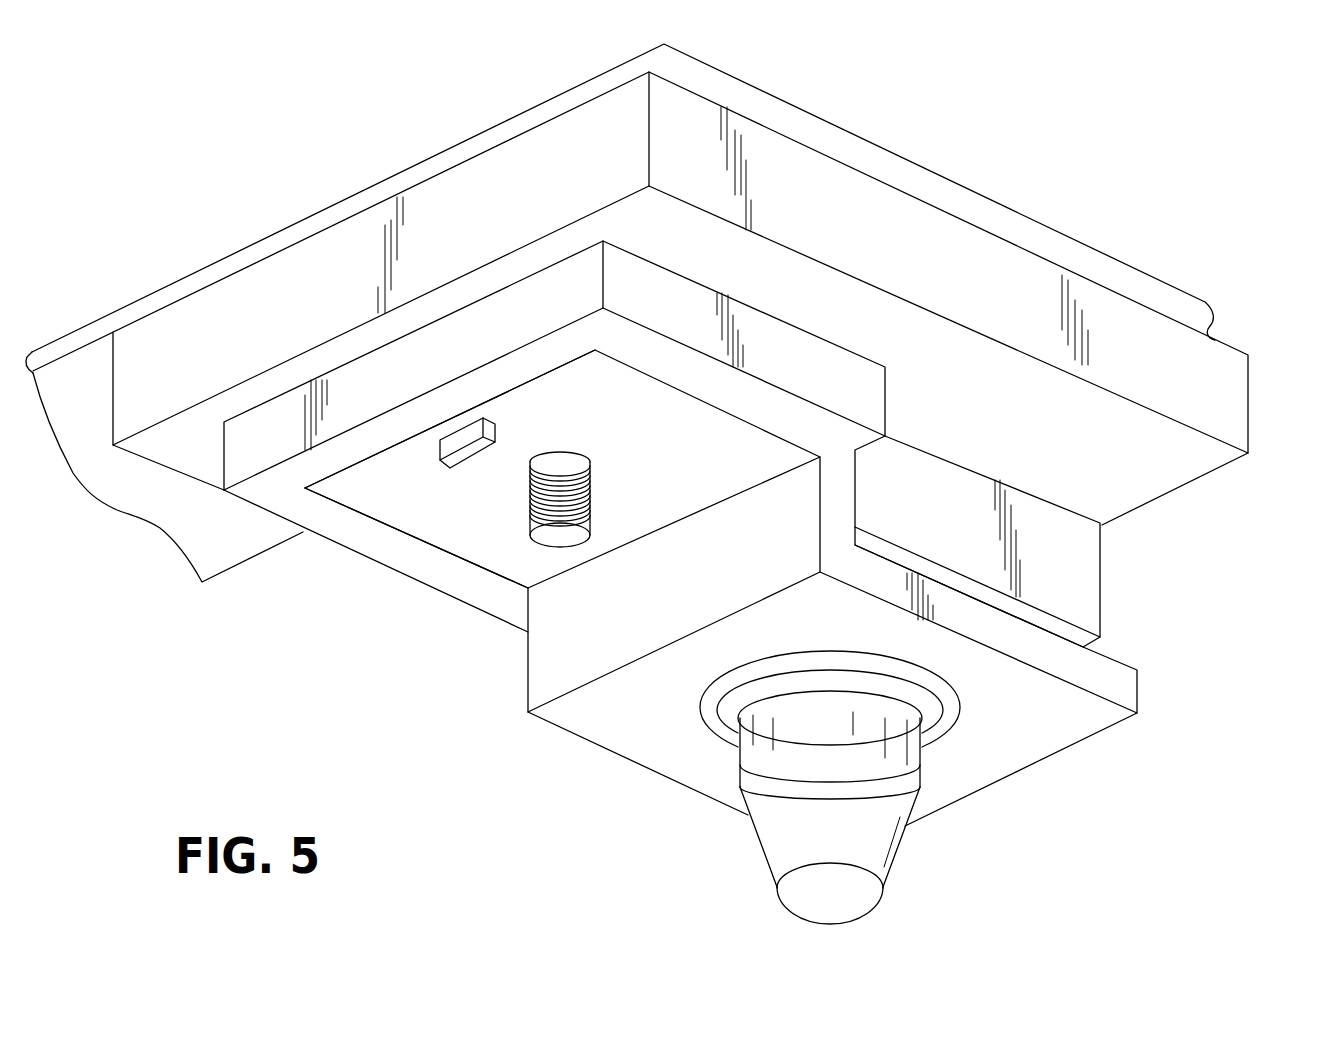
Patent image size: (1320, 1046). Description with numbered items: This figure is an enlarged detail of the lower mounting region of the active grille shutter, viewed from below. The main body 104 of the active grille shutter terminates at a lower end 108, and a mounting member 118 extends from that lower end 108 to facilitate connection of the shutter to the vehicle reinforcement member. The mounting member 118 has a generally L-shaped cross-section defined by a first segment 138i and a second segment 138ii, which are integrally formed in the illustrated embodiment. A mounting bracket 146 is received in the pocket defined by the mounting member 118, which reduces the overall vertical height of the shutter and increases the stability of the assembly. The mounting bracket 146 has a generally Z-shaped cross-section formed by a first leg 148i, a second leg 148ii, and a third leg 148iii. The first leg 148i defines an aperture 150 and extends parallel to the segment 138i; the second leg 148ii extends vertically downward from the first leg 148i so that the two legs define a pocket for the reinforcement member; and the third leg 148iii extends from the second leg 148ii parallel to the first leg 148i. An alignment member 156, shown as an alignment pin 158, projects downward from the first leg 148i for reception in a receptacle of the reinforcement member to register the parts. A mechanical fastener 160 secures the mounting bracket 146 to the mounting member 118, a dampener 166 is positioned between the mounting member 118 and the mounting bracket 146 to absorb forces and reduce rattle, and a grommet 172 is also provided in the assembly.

The main body 104 is at (917, 143).
The lower end 108 is at (1047, 216).
The mounting member 118 is at (769, 477).
The first segment 138i is at (1197, 372).
The second segment 138ii is at (1070, 592).
The mounting bracket 146 is at (695, 616).
The first leg 148i is at (412, 503).
The second leg 148ii is at (562, 648).
The third leg 148iii is at (662, 746).
The aperture 150 is at (575, 450).
The alignment member 156 is at (420, 457).
The alignment pin 158 is at (458, 437).
The mechanical fastener 160 is at (520, 539).
The dampener 166 is at (207, 464).
The grommet 172 is at (927, 873).